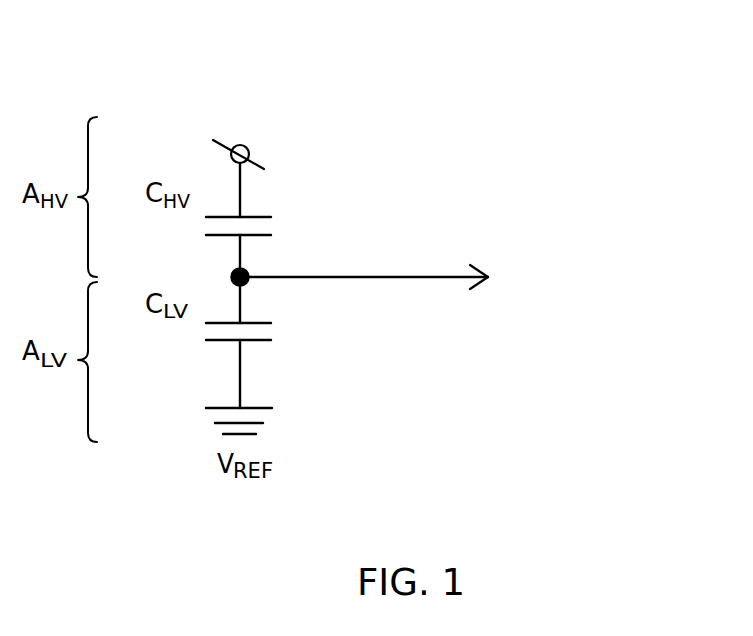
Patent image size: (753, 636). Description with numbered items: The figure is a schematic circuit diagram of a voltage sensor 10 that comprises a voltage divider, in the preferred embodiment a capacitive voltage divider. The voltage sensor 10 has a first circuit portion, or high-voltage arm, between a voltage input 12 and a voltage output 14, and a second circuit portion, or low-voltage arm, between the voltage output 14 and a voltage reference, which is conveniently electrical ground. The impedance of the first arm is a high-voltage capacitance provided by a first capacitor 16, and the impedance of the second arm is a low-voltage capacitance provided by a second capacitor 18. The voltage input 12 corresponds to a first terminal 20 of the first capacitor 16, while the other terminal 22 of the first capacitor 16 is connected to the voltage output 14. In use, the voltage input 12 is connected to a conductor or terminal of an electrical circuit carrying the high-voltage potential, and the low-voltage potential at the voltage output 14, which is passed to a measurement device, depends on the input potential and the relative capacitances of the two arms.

The voltage sensor 10 is at (382, 90).
The voltage input 12 is at (250, 157).
The voltage output 14 is at (247, 285).
The first capacitor 16 is at (257, 217).
The second capacitor 18 is at (255, 342).
The first terminal 20 is at (240, 196).
The other terminal 22 is at (240, 253).